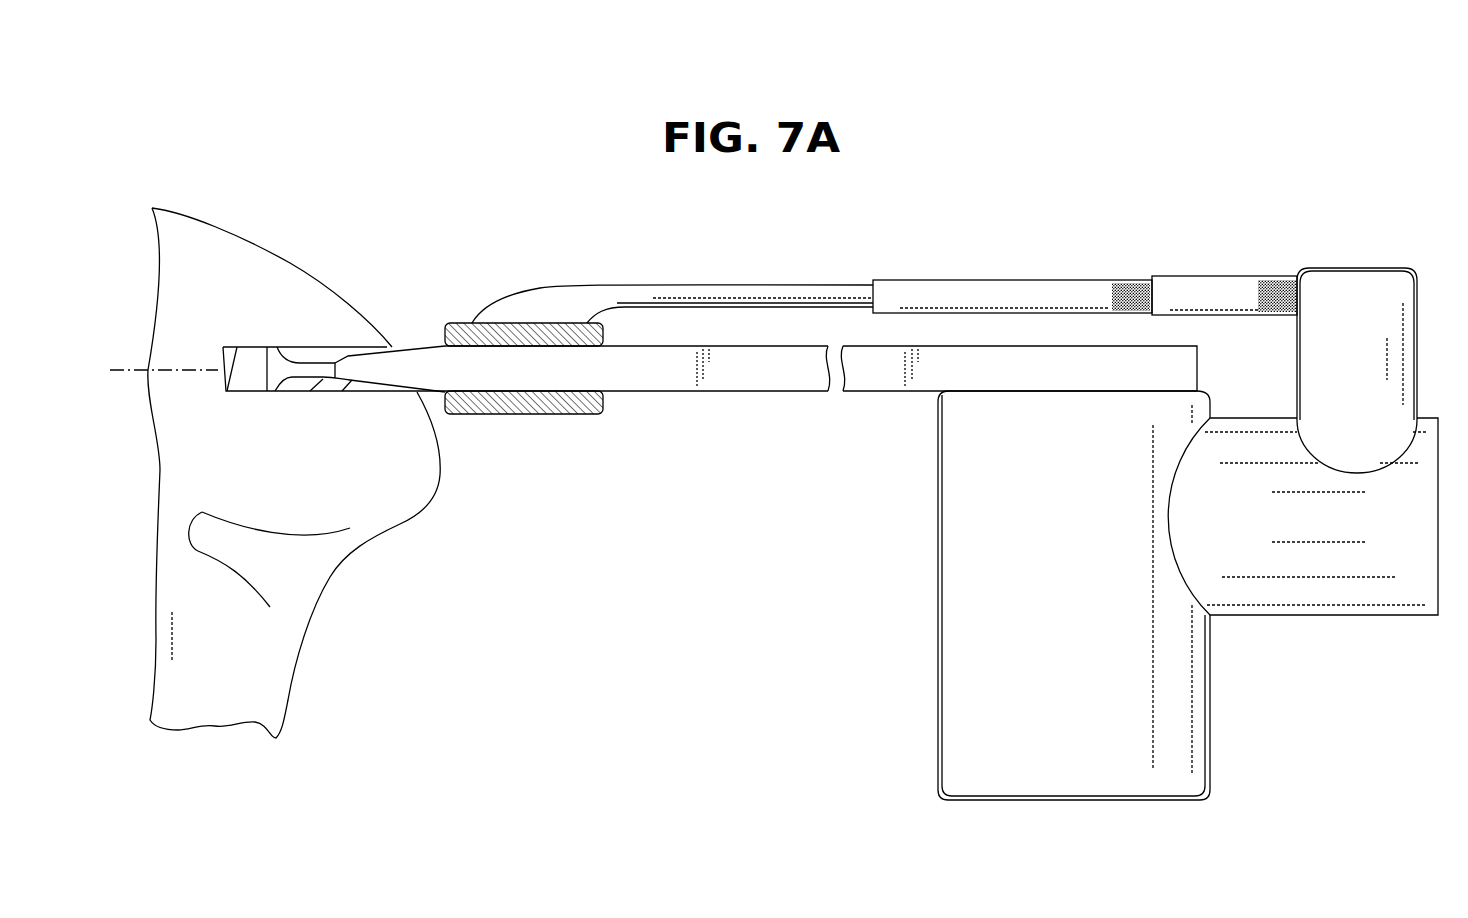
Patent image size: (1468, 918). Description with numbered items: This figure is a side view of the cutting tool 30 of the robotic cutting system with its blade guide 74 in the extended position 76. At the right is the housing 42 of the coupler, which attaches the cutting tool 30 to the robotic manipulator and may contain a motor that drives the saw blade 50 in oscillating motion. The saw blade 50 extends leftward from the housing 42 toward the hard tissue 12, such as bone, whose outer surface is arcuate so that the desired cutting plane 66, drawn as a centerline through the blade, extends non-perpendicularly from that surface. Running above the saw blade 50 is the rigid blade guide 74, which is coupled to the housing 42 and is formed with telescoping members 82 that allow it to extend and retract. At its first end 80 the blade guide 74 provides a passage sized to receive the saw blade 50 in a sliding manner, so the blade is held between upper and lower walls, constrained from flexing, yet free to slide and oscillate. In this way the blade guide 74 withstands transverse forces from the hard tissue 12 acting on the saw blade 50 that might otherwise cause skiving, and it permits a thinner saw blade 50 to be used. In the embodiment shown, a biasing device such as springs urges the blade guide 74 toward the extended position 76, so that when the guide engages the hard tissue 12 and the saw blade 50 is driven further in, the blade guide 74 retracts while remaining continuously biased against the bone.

The hard tissue 12 is at (197, 246).
The cutting plane 66 is at (130, 368).
The saw blade 50 is at (318, 350).
The cutting tool 30 is at (456, 430).
The first end 80 is at (485, 322).
The blade guide 74 is at (571, 278).
The telescoping members 82 is at (1046, 290).
The extended position 76 is at (1197, 166).
The housing 42 is at (1151, 595).